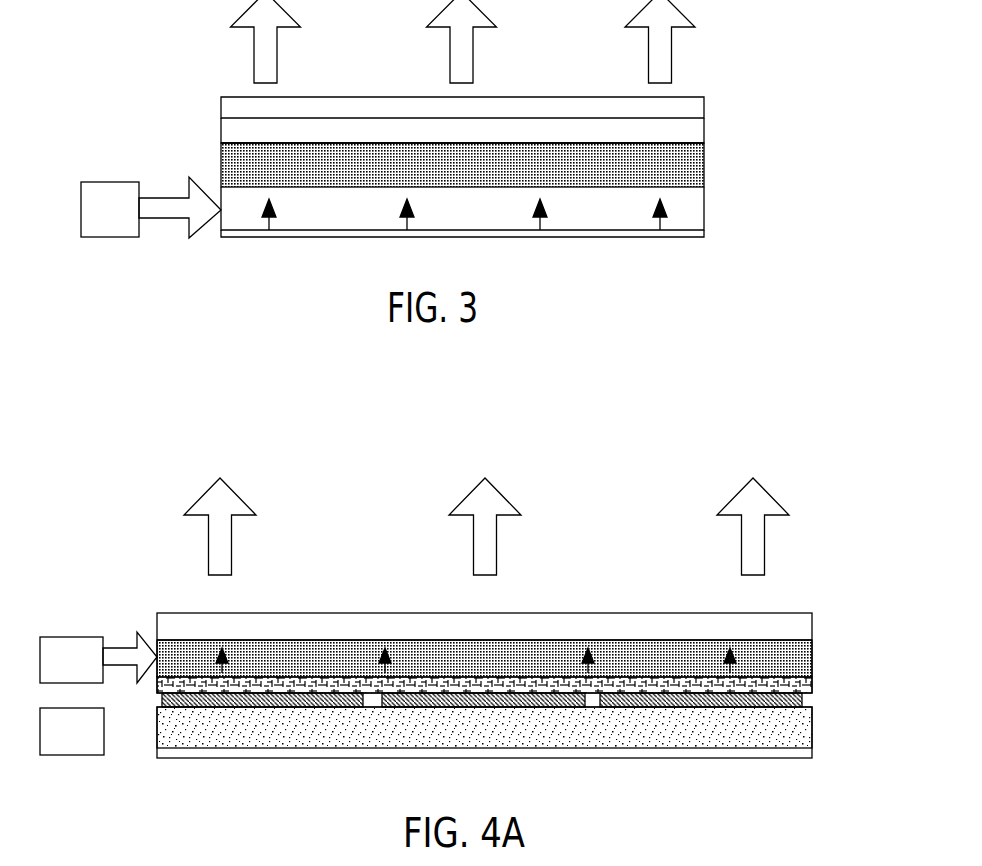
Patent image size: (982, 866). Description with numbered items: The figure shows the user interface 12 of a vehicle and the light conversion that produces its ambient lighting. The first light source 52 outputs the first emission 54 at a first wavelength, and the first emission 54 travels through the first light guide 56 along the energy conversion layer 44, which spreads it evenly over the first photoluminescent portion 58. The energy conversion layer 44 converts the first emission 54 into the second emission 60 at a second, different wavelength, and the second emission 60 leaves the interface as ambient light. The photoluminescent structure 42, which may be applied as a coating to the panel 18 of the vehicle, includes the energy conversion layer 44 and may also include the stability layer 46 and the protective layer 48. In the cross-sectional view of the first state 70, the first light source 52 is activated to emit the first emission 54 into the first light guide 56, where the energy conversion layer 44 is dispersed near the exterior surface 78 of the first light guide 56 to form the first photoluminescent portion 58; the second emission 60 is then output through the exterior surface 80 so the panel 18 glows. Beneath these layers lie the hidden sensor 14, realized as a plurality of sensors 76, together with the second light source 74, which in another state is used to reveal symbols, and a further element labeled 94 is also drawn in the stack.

In FIG. 4A, the user interface 12 is at (102, 512).
In FIG. 4A, the hidden sensor 14 is at (482, 754).
In FIG. 3, the panel 18 is at (688, 235).
In FIG. 4A, the panel 18 is at (267, 753).
In FIG. 3, the photoluminescent structure 42 is at (697, 161).
In FIG. 3, the energy conversion layer 44 is at (515, 165).
In FIG. 3, the stability layer 46 is at (697, 128).
In FIG. 3, the protective layer 48 is at (697, 109).
In FIG. 3, the first light source 52 is at (110, 209).
In FIG. 4A, the first light source 52 is at (71, 660).
In FIG. 3, the first emission 54 is at (170, 212).
In FIG. 4A, the first emission 54 is at (125, 657).
In FIG. 3, the first light guide 56 is at (695, 205).
In FIG. 4A, the first light guide 56 is at (527, 647).
In FIG. 3, the first photoluminescent portion 58 is at (231, 157).
In FIG. 4A, the first photoluminescent portion 58 is at (805, 657).
In FIG. 3, the second emission 60 is at (275, 57).
In FIG. 4A, the second emission 60 is at (227, 548).
In FIG. 4A, the first state 70 is at (445, 553).
In FIG. 4A, the second light source 74 is at (72, 731).
In FIG. 4A, the plurality of sensors 76 is at (482, 754).
In FIG. 4A, the exterior surface of the first light guide 78 is at (527, 620).
In FIG. 4A, the exterior surface 80 is at (368, 627).
In FIG. 4A, the light emitting element 94 is at (340, 697).